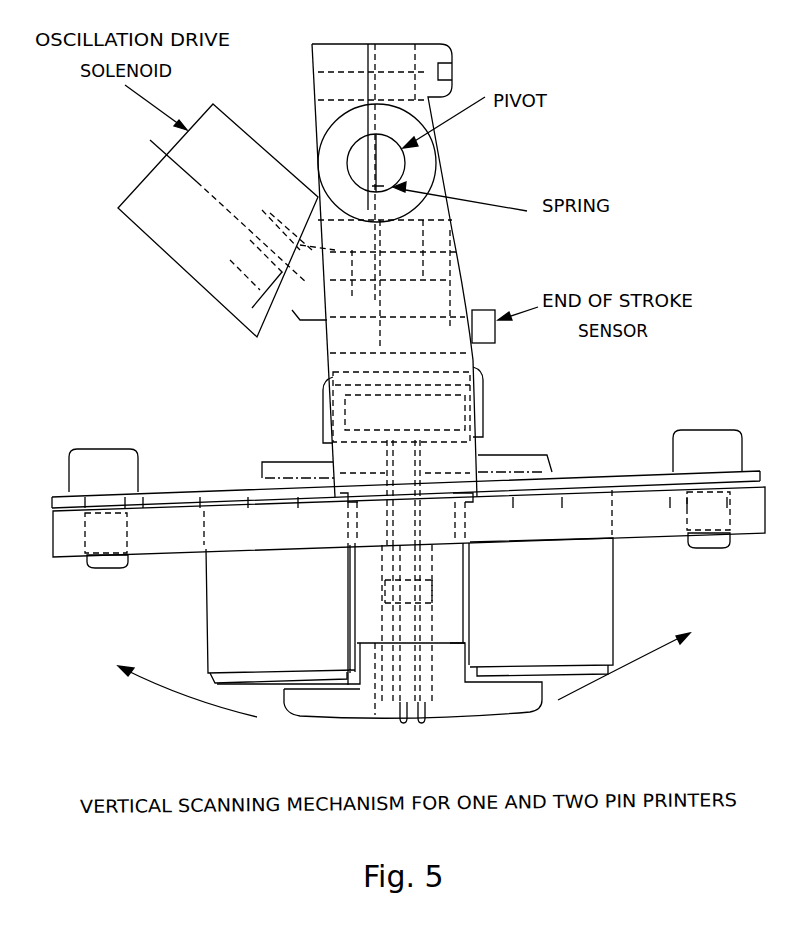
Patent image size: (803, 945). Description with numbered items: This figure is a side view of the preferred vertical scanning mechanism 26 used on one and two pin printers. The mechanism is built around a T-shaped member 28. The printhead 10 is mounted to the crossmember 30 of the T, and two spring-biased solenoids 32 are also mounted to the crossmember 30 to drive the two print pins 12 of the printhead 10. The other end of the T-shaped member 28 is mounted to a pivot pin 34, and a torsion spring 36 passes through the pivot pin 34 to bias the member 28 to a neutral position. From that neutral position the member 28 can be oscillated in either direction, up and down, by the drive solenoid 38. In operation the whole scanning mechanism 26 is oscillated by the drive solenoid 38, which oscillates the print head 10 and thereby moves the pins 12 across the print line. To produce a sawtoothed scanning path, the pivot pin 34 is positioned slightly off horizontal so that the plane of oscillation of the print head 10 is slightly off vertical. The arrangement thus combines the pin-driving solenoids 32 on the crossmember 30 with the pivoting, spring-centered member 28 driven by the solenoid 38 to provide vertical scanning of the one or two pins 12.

The printhead 10 is at (332, 722).
The print pins 12 is at (423, 724).
The vertical scanning mechanism 26 is at (472, 285).
The T-shaped member 28 is at (462, 358).
The crossmember 30 is at (177, 530).
The spring-biased solenoids 32 is at (205, 598).
The pivot pin 34 is at (395, 163).
The torsion spring 36 is at (377, 170).
The drive solenoid 38 is at (155, 245).